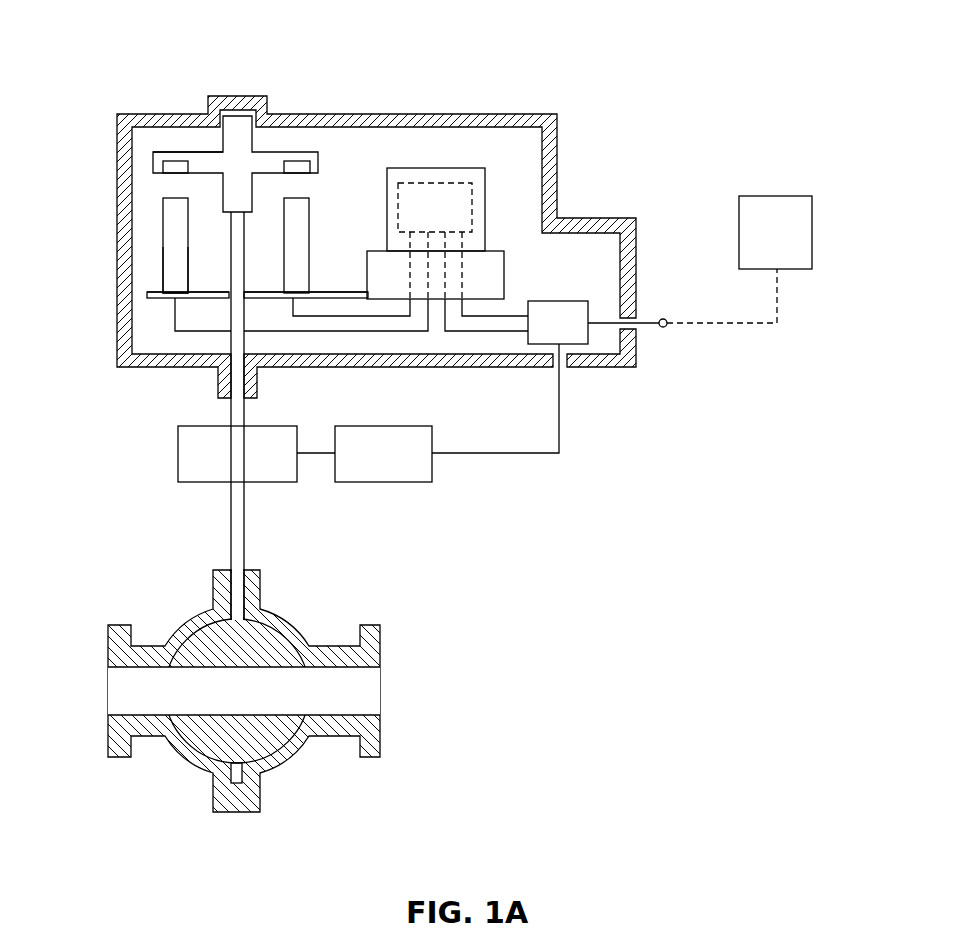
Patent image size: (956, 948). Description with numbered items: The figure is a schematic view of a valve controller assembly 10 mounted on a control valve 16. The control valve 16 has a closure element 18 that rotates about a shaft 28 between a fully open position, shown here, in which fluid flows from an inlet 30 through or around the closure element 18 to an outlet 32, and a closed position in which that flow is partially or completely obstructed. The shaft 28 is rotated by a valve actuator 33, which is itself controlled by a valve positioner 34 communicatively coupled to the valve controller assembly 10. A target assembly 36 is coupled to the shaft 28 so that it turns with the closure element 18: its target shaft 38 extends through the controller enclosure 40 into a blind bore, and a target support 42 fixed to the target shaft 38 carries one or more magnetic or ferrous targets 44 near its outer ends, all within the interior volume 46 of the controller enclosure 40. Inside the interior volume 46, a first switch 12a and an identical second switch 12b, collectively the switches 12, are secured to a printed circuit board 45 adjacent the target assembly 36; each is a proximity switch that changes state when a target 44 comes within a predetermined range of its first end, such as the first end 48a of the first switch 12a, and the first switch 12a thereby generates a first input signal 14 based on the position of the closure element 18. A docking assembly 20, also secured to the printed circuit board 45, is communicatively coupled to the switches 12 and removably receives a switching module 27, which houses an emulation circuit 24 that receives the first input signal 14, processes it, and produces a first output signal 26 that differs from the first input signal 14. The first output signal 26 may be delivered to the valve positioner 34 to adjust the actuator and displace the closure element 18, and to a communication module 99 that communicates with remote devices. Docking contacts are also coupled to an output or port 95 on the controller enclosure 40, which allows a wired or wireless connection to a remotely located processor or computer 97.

The valve controller assembly 10 is at (640, 51).
The controller enclosure 40 is at (374, 113).
The target support 42 is at (286, 150).
The target assembly 36 is at (176, 150).
The targets 44 is at (173, 167).
The actuator column 48a is at (163, 207).
The first switch 12a is at (163, 247).
The second switch 12b is at (308, 253).
The actuator assembly 12 is at (155, 274).
The printed circuit board 45 is at (153, 297).
The first input signal 14 is at (190, 331).
The interior volume 46 is at (341, 203).
The second switching module 27 is at (485, 212).
The first emulation circuit 24 is at (423, 219).
The docking assembly 20 is at (504, 265).
The first output signal 26 is at (493, 331).
The communication module 99 is at (546, 333).
The output or port 95 is at (668, 340).
The remotely located processor or computer 97 is at (812, 226).
The target shaft 38 is at (228, 408).
The valve actuator 33 is at (178, 455).
The valve positioner 34 is at (416, 483).
The shaft 28 is at (231, 520).
The control valve 16 is at (293, 765).
The closure element 18 is at (262, 645).
The inlet 30 is at (120, 687).
The outlet 32 is at (370, 691).